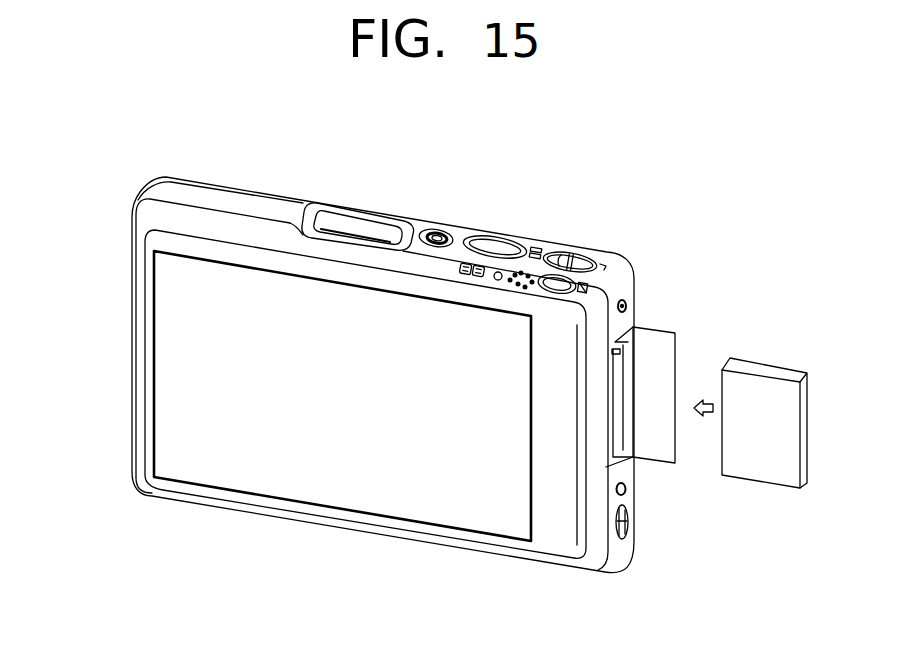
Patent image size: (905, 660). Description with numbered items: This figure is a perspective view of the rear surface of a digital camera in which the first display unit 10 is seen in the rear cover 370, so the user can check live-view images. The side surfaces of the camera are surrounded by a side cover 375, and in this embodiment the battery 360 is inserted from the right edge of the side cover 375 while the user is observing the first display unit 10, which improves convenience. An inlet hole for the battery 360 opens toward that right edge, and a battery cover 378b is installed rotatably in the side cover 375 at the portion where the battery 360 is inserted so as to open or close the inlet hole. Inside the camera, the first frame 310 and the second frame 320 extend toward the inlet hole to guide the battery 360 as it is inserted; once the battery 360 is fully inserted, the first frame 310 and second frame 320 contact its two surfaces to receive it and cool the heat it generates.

The first display unit 10 is at (272, 465).
The first frame 310 is at (612, 457).
The second frame 320 is at (625, 358).
The battery 360 is at (763, 473).
The rear cover 370 is at (148, 344).
The side cover 375 is at (623, 290).
The battery cover 378b is at (653, 335).